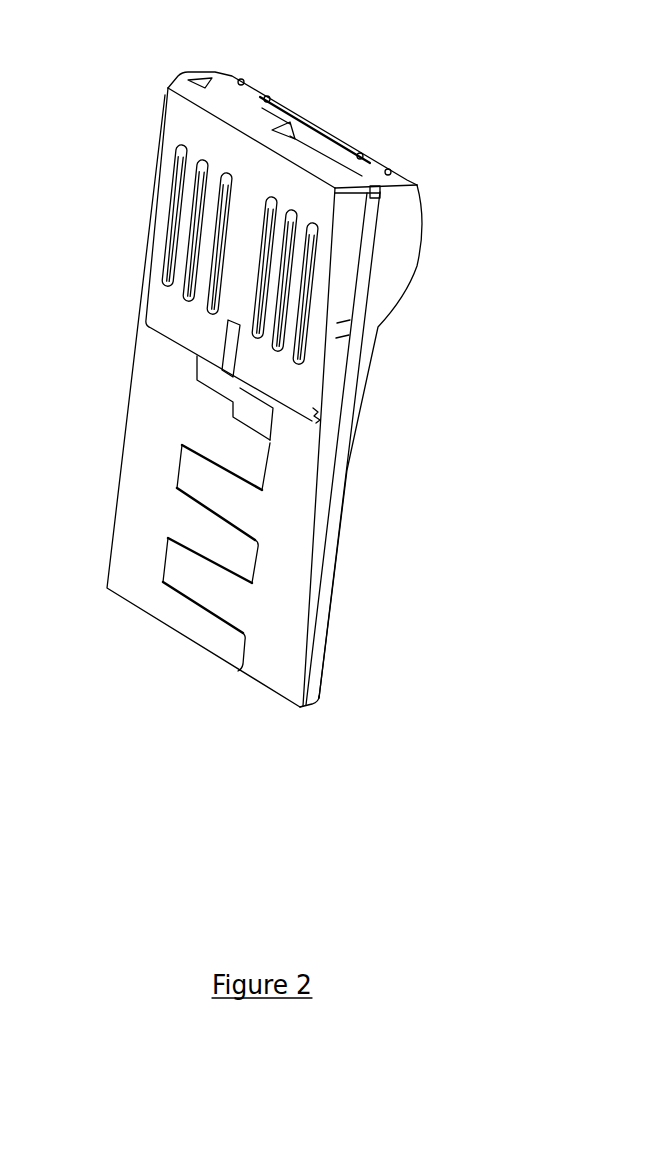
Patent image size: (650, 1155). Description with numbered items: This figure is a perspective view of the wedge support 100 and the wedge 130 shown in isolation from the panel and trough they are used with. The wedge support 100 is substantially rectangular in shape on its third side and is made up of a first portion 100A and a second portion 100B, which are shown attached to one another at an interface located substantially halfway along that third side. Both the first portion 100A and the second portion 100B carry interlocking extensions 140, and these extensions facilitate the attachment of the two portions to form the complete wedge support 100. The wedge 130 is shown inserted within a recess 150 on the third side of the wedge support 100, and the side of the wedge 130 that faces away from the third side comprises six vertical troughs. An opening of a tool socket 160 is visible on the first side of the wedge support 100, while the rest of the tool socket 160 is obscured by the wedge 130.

The wedge support 100 is at (423, 208).
The first portion 100A is at (147, 453).
The second portion 100B is at (310, 527).
The wedge 130 is at (163, 123).
The interlocking extensions 140 is at (240, 455).
The recess 150 is at (207, 83).
The tool socket 160 is at (303, 132).